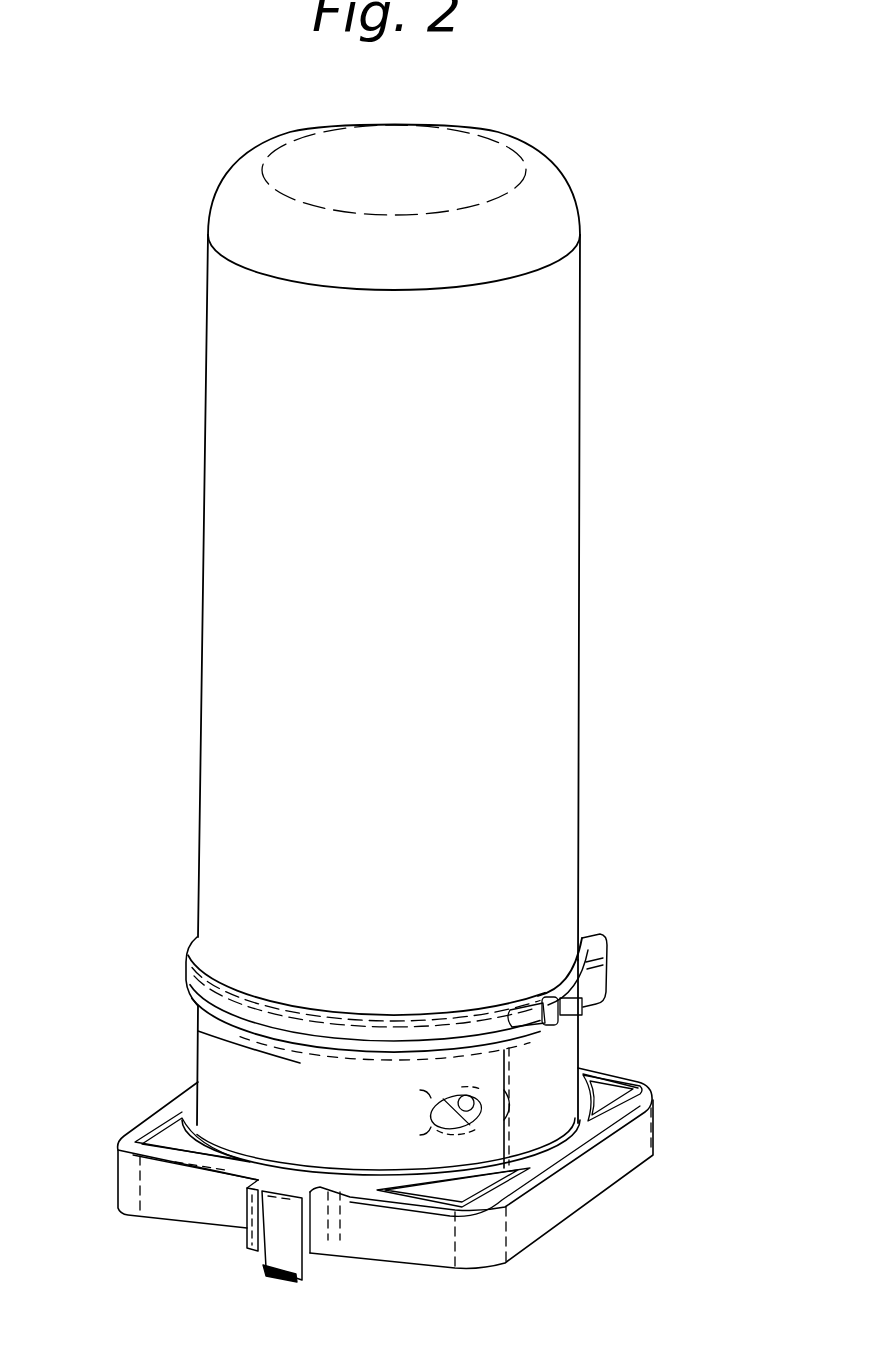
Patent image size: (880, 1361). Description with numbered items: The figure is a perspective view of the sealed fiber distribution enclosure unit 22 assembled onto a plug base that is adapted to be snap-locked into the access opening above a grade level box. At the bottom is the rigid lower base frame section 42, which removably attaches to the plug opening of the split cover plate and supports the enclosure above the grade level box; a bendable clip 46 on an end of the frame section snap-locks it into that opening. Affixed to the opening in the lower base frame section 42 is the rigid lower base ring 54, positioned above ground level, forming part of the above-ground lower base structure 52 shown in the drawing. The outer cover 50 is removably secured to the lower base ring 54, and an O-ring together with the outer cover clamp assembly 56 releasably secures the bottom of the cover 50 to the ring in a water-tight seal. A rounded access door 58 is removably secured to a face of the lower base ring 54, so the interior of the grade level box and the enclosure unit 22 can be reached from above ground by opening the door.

The sealed fiber distribution enclosure unit 22 is at (632, 546).
The outer cover 50 is at (548, 662).
The lower housing 52 is at (214, 1075).
The lower base ring 54 is at (547, 1049).
The outer cover clamp assembly 56 is at (477, 992).
The access door 58 is at (300, 1062).
The lower base frame section 42 is at (570, 1193).
The bendable clip 46 is at (277, 1239).